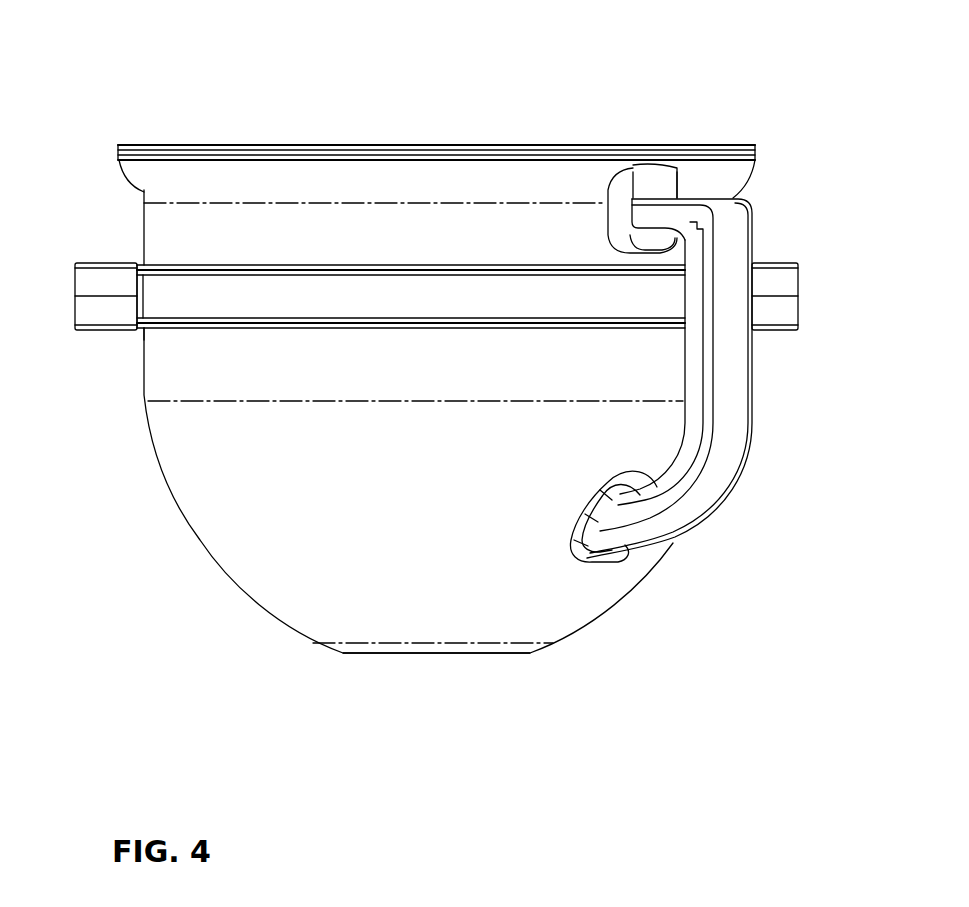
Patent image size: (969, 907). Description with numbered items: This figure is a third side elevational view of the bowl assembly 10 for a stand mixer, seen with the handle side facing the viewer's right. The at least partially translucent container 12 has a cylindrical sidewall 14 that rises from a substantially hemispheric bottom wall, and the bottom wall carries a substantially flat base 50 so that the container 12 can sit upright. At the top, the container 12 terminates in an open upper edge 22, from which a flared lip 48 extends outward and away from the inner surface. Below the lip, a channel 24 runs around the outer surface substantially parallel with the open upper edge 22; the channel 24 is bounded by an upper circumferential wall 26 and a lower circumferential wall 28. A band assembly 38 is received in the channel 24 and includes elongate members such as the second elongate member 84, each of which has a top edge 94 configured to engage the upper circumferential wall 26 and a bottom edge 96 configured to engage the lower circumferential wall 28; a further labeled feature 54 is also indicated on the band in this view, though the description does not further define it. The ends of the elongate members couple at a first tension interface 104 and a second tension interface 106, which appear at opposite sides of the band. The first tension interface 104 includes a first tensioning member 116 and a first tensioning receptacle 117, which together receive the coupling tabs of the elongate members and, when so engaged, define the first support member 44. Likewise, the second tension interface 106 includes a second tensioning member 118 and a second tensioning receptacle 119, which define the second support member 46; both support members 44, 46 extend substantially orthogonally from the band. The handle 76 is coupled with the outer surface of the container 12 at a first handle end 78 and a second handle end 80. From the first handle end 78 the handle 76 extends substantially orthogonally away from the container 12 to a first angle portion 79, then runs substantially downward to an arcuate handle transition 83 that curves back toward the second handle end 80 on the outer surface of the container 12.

The bowl assembly 10 is at (665, 94).
The container 12 is at (229, 578).
The sidewall 14 is at (178, 210).
The open upper edge 22 is at (620, 145).
The channel 24 is at (352, 267).
The upper circumferential wall 26 is at (236, 266).
The lower circumferential wall 28 is at (173, 330).
The band assembly 38 is at (316, 289).
The first support member 44 is at (760, 320).
The second support member 46 is at (127, 318).
The flared lip 48 is at (123, 165).
The flat base 50 is at (488, 653).
The band segment 54 is at (397, 267).
The handle 76 is at (720, 480).
The first handle end 78 is at (655, 185).
The first angle portion 79 is at (717, 201).
The second handle end 80 is at (583, 557).
The arcuate handle transition 83 is at (633, 555).
The second elongate member 84 is at (228, 300).
The top edge 94 is at (488, 267).
The bottom edge 96 is at (518, 328).
The first tension interface 104 is at (790, 294).
The second tension interface 106 is at (83, 290).
The first tensioning member 116 is at (765, 268).
The first tensioning receptacle 117 is at (790, 328).
The second tensioning member 118 is at (118, 277).
The second tensioning receptacle 119 is at (93, 318).